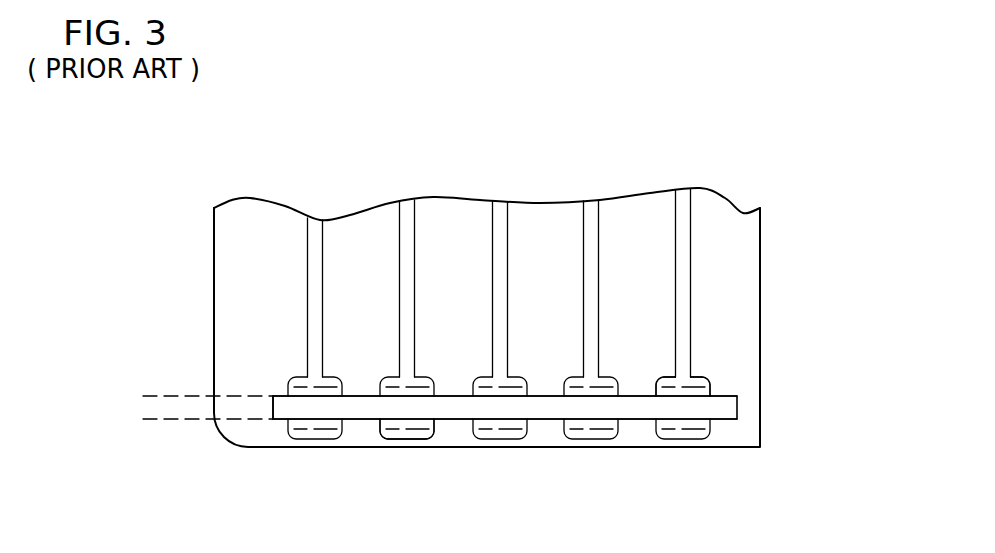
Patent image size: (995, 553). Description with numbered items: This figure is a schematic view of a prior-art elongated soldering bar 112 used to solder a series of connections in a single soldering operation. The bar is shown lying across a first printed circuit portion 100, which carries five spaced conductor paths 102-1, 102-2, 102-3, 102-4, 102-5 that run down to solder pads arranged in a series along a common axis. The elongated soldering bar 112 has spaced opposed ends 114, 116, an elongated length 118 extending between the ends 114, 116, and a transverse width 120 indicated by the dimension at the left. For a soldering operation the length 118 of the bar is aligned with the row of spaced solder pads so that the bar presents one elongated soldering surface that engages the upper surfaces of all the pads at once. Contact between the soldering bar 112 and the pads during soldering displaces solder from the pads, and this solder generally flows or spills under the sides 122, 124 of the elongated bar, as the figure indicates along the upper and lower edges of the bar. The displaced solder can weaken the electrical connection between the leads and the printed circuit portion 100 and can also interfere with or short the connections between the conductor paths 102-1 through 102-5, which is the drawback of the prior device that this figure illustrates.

The first printed circuit portion 100 is at (763, 290).
The conductor path 102-1 is at (687, 243).
The conductor path 102-2 is at (595, 243).
The conductor path 102-3 is at (503, 243).
The conductor path 102-4 is at (410, 243).
The conductor path 102-5 is at (317, 243).
The elongated soldering bar 112 is at (728, 396).
The end of soldering bar 114 is at (273, 407).
The end of soldering bar 116 is at (737, 408).
The elongated length 118 is at (722, 420).
The transverse width 120 is at (168, 328).
The side of soldering bar 122 is at (407, 420).
The side of soldering bar 124 is at (357, 395).